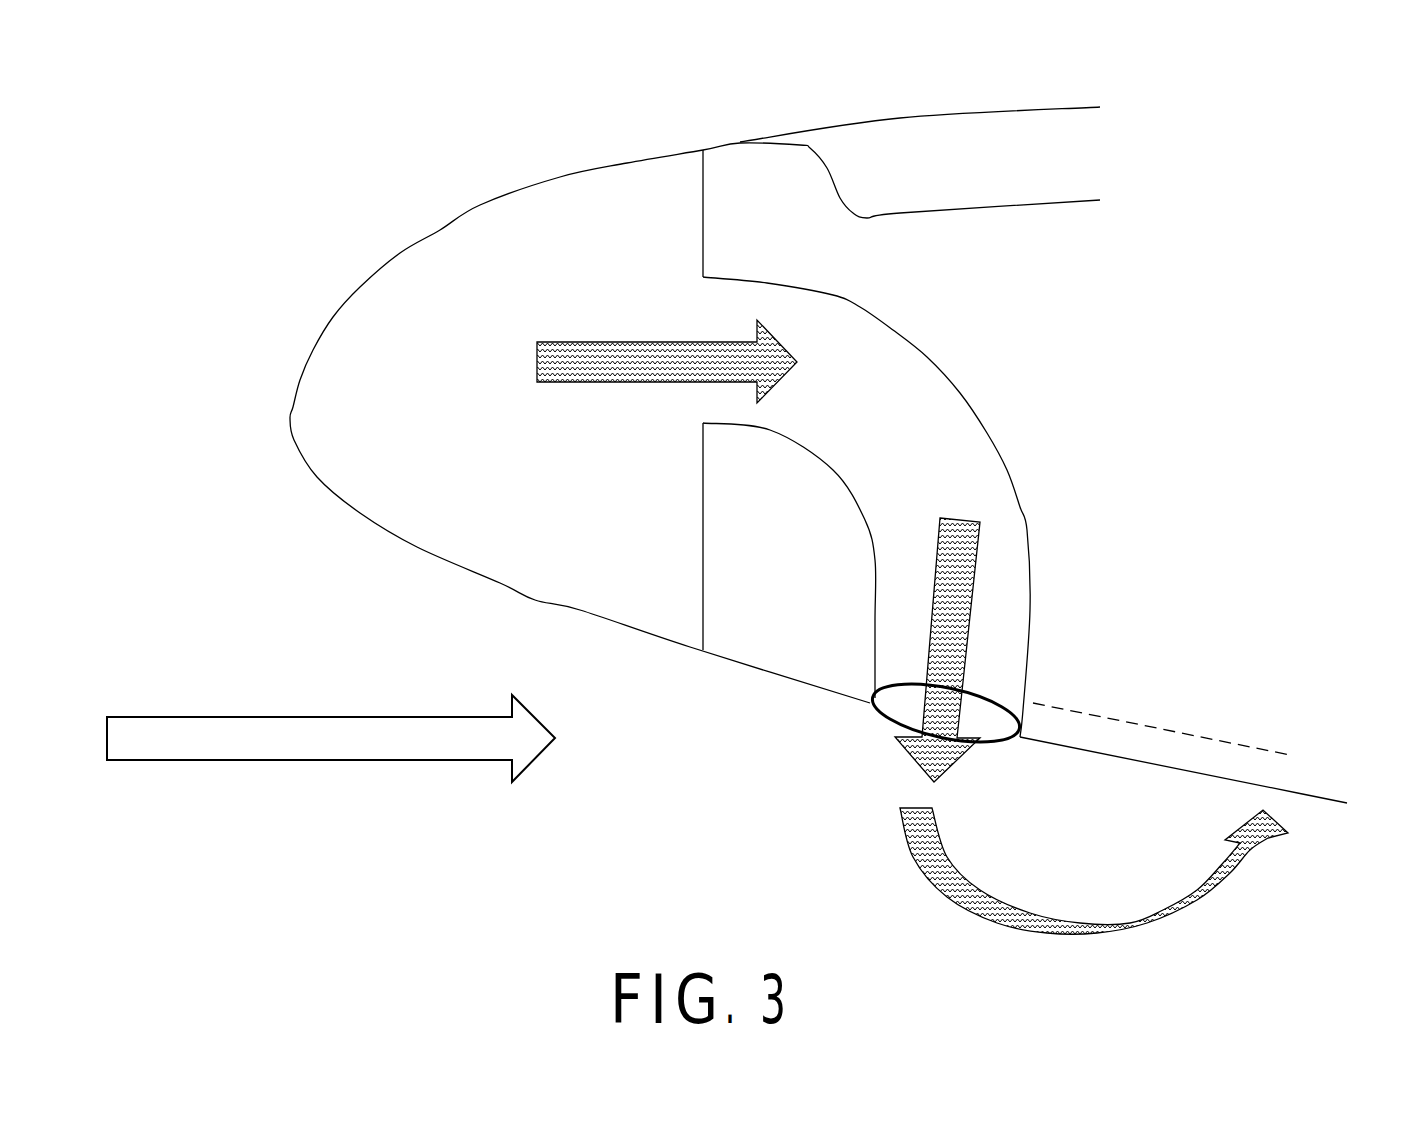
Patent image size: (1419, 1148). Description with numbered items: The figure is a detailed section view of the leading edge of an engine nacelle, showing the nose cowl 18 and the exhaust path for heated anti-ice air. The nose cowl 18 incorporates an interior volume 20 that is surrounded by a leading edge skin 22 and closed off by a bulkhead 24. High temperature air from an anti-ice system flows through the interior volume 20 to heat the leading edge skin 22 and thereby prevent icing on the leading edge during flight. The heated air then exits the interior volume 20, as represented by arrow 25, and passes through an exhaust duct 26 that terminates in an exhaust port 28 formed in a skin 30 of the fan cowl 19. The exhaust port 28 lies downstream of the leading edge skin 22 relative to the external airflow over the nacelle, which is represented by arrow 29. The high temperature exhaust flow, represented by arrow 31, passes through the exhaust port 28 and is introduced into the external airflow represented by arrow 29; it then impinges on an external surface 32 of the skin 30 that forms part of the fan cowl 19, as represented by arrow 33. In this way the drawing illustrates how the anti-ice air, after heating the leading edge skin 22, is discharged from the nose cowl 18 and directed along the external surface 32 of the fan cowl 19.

The nose cowl 18 is at (533, 604).
The fan cowl 19 is at (1340, 810).
The interior volume 20 is at (402, 431).
The leading edge skin 22 is at (417, 550).
The bulkhead 24 is at (703, 548).
The arrow representing flow of high temperature air exiting the interior volume 25 is at (623, 340).
The exhaust duct 26 is at (953, 440).
The exhaust port 28 is at (985, 727).
The arrow representing external airflow 29 is at (383, 760).
The skin 30 is at (1118, 740).
The arrow representing high temperature exhaust flow 31 is at (970, 627).
The external surface 32 is at (1188, 770).
The arrow representing exhaust impingement on the external surface 33 is at (1153, 935).